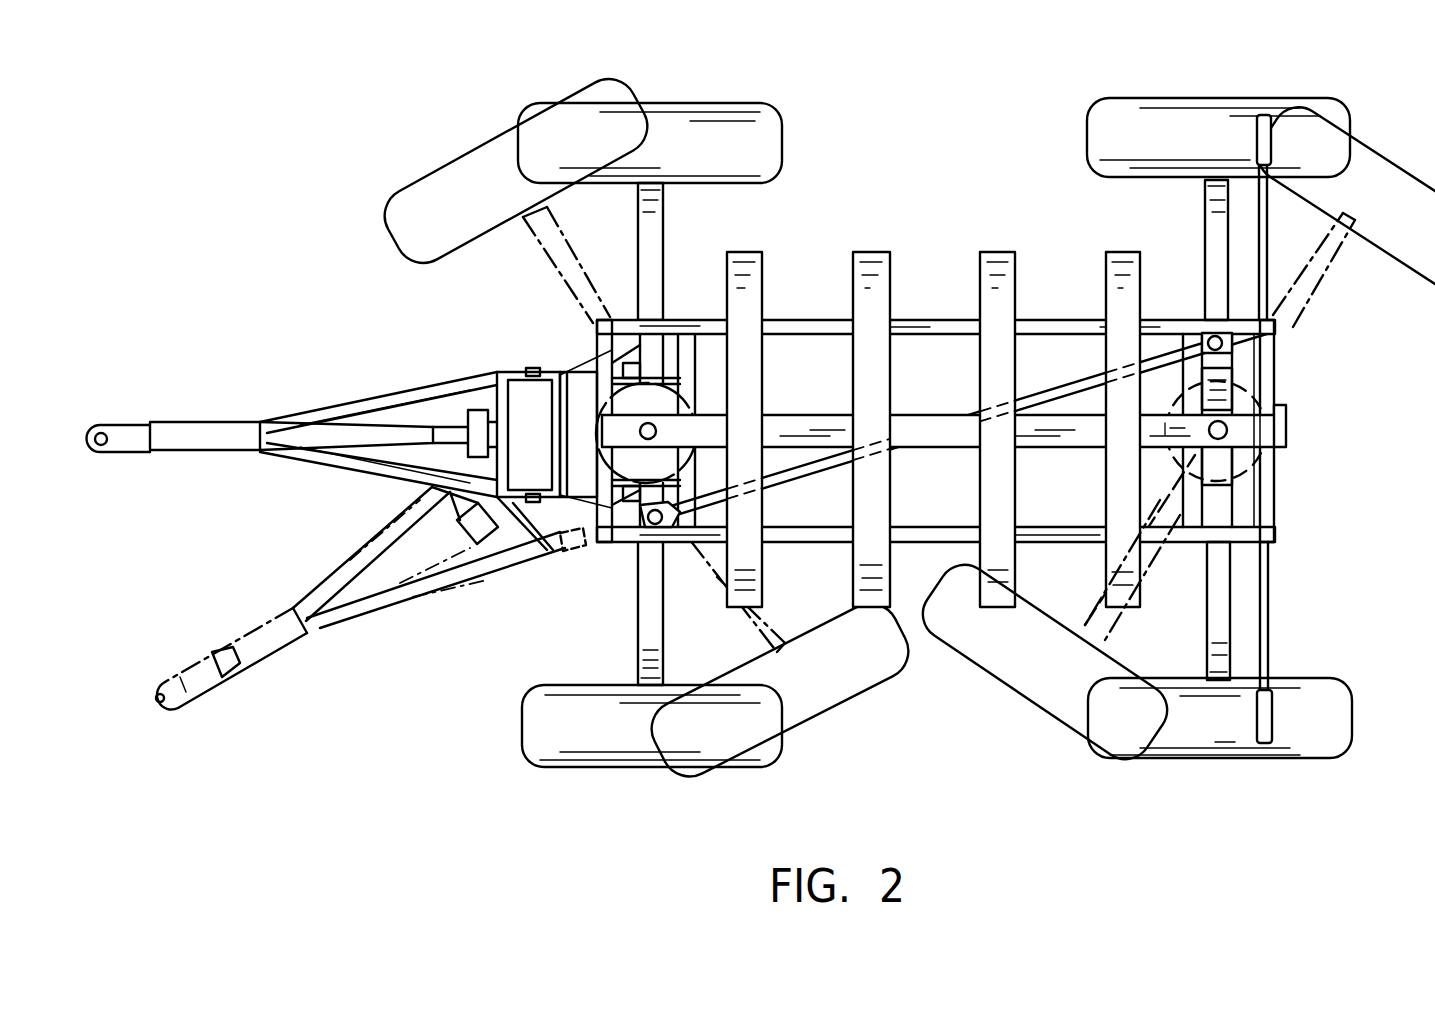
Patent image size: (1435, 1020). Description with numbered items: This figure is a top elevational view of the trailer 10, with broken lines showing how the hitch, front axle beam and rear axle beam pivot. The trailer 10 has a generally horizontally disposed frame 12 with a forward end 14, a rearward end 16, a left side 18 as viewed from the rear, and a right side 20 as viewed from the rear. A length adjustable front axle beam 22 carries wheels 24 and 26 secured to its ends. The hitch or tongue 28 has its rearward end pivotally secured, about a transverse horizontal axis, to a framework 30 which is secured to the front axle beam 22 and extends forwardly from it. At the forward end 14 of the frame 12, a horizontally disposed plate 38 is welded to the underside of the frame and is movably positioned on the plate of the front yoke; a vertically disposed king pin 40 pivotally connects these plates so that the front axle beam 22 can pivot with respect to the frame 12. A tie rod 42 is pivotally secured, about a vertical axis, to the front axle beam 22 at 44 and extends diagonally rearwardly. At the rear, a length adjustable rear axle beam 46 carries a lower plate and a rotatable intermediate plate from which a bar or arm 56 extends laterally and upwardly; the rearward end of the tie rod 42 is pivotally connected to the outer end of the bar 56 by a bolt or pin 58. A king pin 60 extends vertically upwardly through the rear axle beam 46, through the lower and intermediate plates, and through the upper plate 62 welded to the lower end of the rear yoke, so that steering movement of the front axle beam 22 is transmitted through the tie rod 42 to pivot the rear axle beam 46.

The trailer 10 is at (878, 180).
The frame 12 is at (940, 285).
The forward end 14 is at (572, 335).
The rearward end 16 is at (1292, 387).
The left side 18 is at (930, 553).
The right side 20 is at (1062, 305).
The front axle beam 22 is at (622, 608).
The wheel 24 is at (545, 740).
The wheel 26 is at (722, 108).
The hitch or tongue 28 is at (374, 371).
The framework 30 is at (570, 545).
The plate 38 is at (690, 402).
The pivot pin or king pin 40 is at (656, 428).
The tie rod 42 is at (945, 430).
The pivot connection 44 is at (665, 530).
The rear axle beam 46 is at (1180, 214).
The bar or arm 56 is at (1280, 357).
The bolt or pin 58 is at (1240, 342).
The pivot or king pin 60 is at (1228, 431).
The upper plate 62 is at (1262, 466).